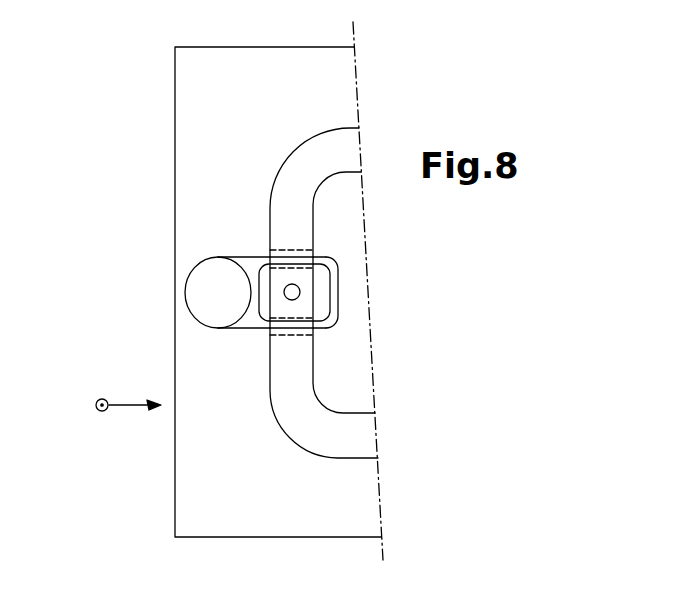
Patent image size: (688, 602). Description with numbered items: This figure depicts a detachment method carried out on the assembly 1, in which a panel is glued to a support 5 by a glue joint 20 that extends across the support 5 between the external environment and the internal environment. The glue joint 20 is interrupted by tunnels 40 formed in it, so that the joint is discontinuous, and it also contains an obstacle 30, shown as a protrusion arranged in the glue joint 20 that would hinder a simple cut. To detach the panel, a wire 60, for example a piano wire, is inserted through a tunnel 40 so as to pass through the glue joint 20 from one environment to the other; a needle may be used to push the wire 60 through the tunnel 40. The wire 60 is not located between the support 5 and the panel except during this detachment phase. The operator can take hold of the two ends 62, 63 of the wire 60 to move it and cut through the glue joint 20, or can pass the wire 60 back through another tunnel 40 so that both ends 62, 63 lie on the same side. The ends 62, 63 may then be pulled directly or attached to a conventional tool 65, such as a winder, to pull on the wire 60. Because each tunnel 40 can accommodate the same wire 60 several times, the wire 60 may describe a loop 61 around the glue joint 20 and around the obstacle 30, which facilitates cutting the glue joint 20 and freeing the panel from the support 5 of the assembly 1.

The assembly 1 is at (128, 312).
The support 5 is at (175, 132).
The glue joint 20 is at (337, 140).
The obstacle 30 is at (300, 290).
The tunnel 40 is at (292, 249).
The wire 60 is at (247, 257).
The loop 61 is at (341, 259).
The end of the wire 62 is at (222, 262).
The end of the wire 63 is at (217, 332).
The tool 65 is at (233, 304).